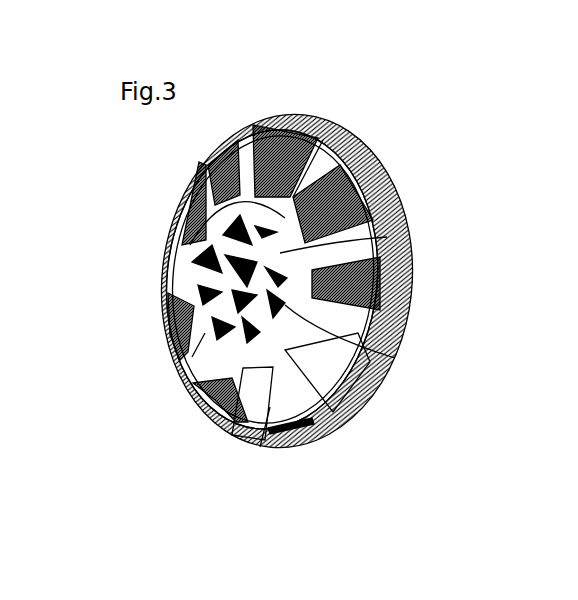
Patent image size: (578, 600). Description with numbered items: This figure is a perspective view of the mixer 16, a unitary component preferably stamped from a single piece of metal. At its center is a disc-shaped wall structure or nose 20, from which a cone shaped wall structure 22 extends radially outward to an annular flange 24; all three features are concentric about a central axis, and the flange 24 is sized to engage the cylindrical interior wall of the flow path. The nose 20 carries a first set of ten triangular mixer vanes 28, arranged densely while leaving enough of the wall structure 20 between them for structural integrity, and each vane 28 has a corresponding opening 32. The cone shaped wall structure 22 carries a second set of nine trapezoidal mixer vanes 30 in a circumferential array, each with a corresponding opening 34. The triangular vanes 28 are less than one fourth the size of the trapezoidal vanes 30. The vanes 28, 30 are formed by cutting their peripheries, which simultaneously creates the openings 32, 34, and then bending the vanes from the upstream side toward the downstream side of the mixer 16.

The mixer 16 is at (162, 428).
The disc-shaped wall structure 20 is at (200, 270).
The cone shaped wall structure 22 is at (228, 430).
The annular flange 24 is at (318, 106).
The first set of mixer vanes 28 is at (360, 146).
The second set of mixer vanes 30 is at (275, 403).
The opening 32 is at (197, 203).
The opening 34 is at (205, 160).